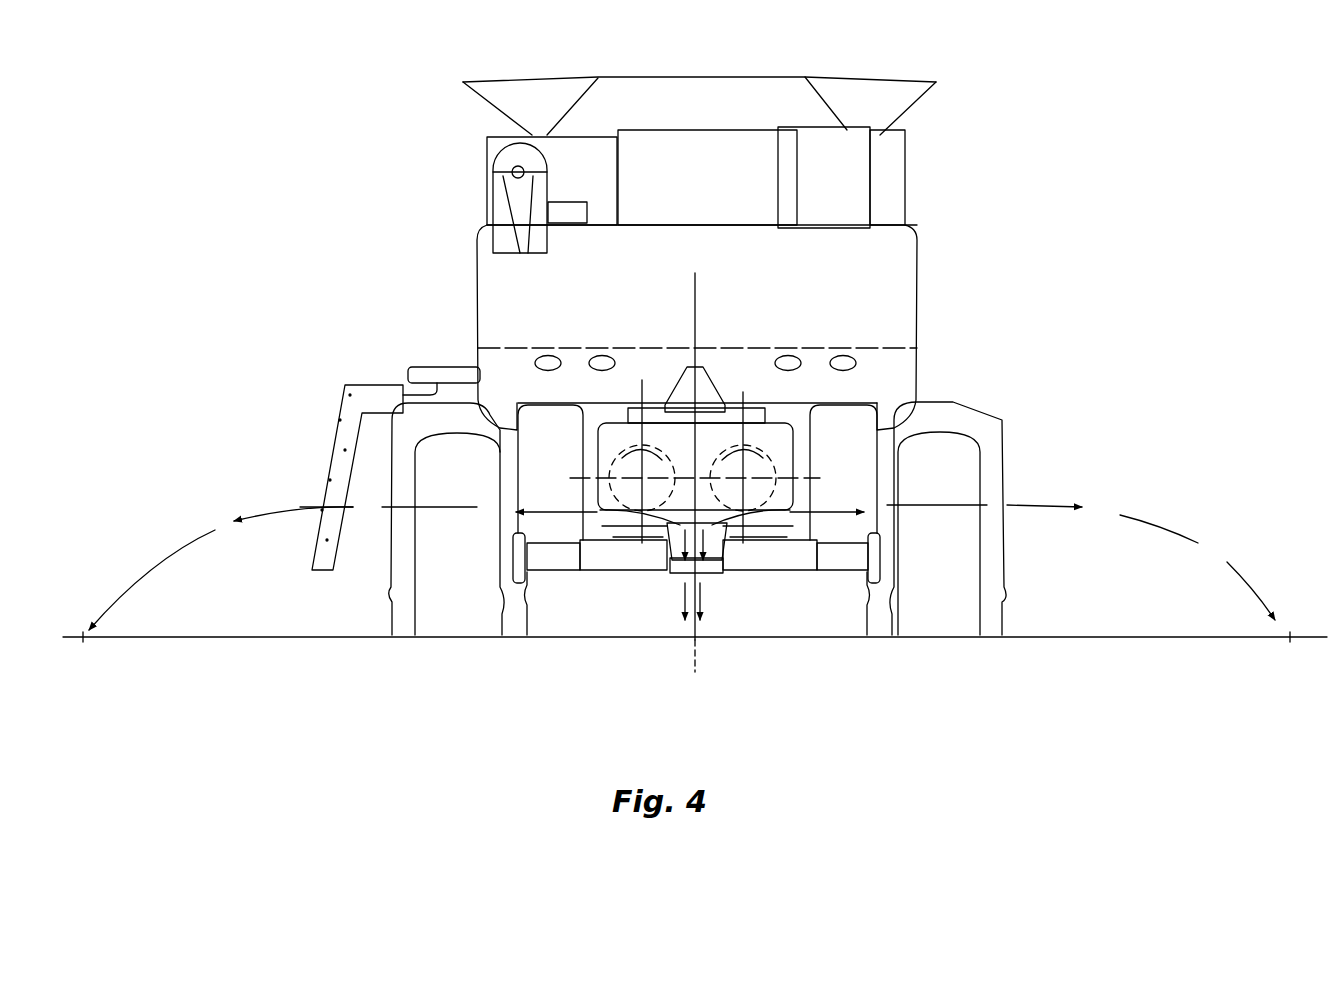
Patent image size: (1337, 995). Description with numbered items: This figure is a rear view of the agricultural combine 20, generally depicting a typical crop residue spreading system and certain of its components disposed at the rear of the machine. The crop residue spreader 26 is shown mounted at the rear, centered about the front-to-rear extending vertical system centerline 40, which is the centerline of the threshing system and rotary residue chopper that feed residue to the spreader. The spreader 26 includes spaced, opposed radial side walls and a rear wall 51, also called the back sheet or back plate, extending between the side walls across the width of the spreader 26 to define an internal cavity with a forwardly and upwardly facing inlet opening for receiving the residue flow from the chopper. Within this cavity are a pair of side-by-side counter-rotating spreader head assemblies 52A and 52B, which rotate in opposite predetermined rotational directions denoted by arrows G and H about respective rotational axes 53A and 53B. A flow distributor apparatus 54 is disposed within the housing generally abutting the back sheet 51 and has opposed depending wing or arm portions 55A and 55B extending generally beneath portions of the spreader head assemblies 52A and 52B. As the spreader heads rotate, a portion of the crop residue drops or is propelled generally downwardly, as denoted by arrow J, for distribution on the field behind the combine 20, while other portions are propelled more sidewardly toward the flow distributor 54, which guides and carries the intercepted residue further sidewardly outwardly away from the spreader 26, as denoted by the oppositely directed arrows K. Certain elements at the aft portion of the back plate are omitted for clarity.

The agricultural combine 20 is at (1024, 216).
The crop residue spreader 26 is at (804, 439).
The system centerline 40 is at (698, 283).
The rear wall 51 is at (703, 433).
The spreader head assembly 52A is at (620, 452).
The spreader head assembly 52B is at (763, 447).
The rotational axis 53A is at (637, 485).
The rotational axis 53B is at (745, 500).
The flow distributor apparatus 54 is at (667, 557).
The depending wing or arm portion 55A is at (603, 512).
The depending wing or arm portion 55B is at (745, 512).
The rotational direction arrow G is at (660, 460).
The rotational direction arrow H is at (732, 457).
The downward flow arrow J is at (700, 600).
The sideward flow arrows K is at (280, 510).